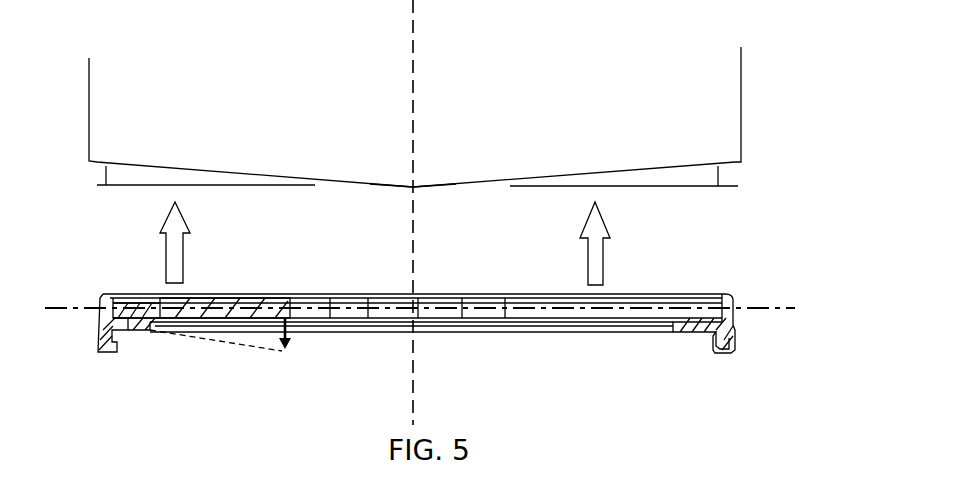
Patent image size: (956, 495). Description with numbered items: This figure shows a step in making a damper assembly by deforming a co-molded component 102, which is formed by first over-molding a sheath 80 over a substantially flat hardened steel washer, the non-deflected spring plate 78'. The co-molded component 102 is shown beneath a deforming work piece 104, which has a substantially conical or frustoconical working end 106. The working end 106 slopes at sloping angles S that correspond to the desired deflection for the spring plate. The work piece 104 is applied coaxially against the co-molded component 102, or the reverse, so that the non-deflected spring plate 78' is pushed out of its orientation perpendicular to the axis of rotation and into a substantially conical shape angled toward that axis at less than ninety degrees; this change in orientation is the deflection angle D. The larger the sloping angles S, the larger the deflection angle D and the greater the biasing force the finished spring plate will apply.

The deforming work piece 104 is at (718, 105).
The working end 106 is at (405, 190).
The sloping angles S is at (96, 172).
The co-molded component 102 is at (722, 283).
The sheath 80 is at (100, 333).
The non-deflected spring plate 78' is at (243, 272).
The deflection angle D is at (292, 340).